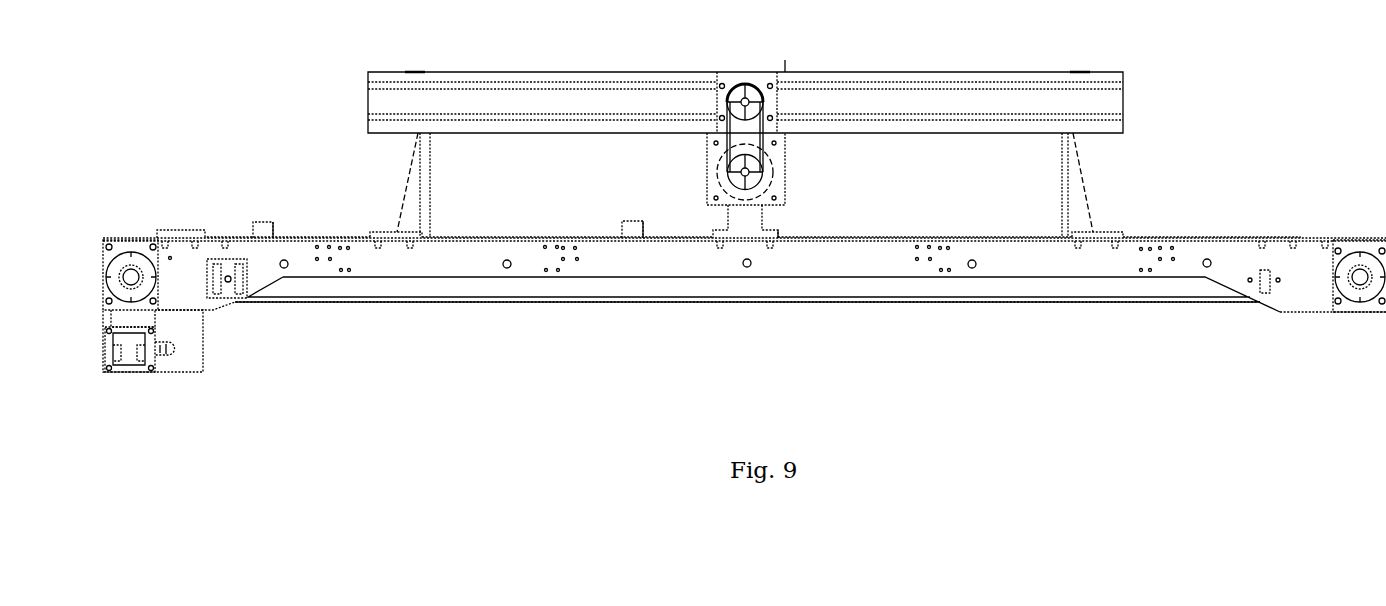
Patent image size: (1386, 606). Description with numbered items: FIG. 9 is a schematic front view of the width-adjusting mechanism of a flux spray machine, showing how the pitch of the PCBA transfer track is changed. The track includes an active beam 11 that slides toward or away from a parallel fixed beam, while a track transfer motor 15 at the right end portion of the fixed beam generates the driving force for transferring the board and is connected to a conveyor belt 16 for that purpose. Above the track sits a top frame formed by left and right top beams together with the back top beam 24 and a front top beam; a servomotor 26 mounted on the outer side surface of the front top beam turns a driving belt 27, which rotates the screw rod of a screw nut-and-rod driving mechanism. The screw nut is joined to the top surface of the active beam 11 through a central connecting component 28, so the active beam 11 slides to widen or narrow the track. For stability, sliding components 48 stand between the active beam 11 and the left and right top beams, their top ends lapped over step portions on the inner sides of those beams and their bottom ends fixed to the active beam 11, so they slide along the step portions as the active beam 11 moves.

The active beam 11 is at (1218, 248).
The track transfer motor 15 is at (195, 345).
The conveyor belt 16 is at (1025, 300).
The back top beam 24 is at (942, 90).
The servomotor 26 is at (778, 173).
The driving belt 27 is at (718, 143).
The central connecting component 28 is at (760, 218).
The sliding components 48 is at (414, 210).